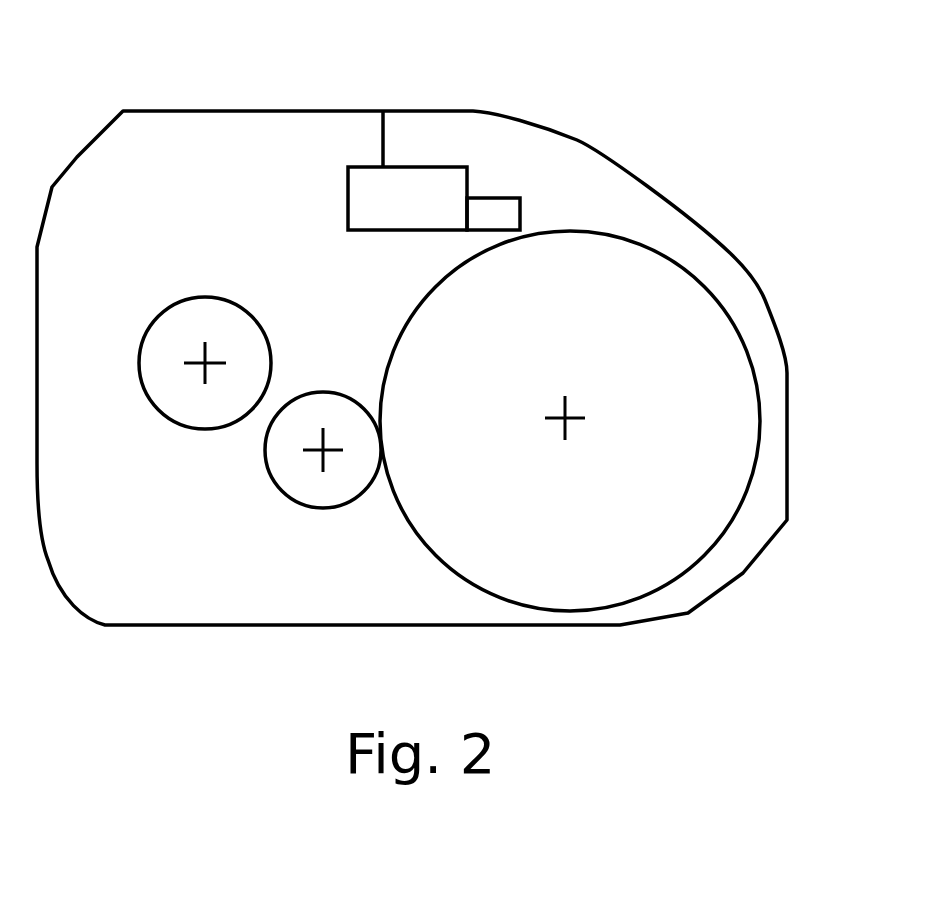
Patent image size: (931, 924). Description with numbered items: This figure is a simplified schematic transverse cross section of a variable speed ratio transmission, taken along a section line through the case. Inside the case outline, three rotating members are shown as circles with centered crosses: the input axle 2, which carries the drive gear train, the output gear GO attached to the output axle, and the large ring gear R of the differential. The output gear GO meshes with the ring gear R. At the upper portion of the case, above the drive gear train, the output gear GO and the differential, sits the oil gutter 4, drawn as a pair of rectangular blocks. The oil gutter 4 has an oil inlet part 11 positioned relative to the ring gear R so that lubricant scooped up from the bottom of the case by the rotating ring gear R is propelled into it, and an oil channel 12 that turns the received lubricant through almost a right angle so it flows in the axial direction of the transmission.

The ring gear R is at (668, 327).
The input axle 2 is at (217, 318).
The output gear GO is at (302, 480).
The oil gutter 4 is at (398, 190).
The oil inlet part 11 is at (497, 197).
The oil channel 12 is at (383, 111).